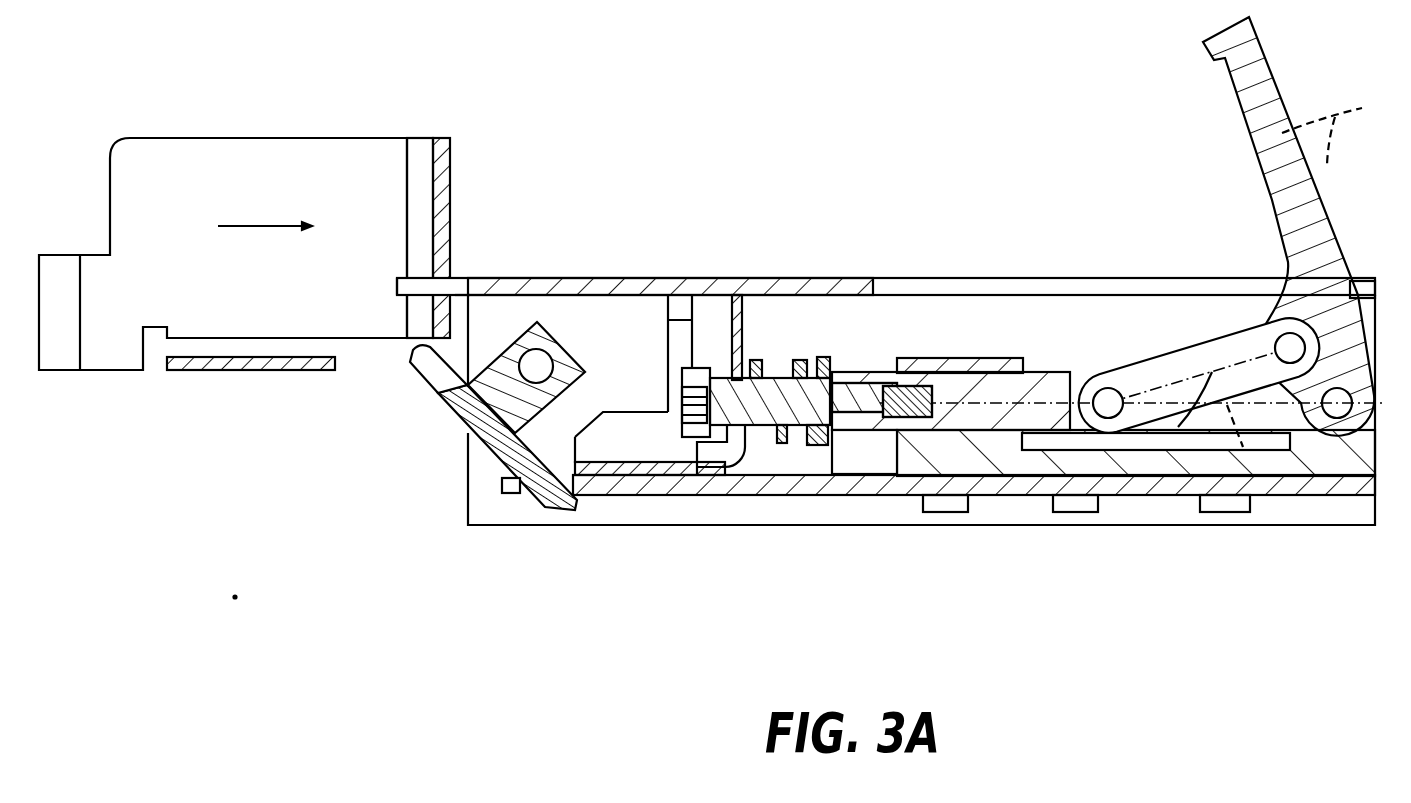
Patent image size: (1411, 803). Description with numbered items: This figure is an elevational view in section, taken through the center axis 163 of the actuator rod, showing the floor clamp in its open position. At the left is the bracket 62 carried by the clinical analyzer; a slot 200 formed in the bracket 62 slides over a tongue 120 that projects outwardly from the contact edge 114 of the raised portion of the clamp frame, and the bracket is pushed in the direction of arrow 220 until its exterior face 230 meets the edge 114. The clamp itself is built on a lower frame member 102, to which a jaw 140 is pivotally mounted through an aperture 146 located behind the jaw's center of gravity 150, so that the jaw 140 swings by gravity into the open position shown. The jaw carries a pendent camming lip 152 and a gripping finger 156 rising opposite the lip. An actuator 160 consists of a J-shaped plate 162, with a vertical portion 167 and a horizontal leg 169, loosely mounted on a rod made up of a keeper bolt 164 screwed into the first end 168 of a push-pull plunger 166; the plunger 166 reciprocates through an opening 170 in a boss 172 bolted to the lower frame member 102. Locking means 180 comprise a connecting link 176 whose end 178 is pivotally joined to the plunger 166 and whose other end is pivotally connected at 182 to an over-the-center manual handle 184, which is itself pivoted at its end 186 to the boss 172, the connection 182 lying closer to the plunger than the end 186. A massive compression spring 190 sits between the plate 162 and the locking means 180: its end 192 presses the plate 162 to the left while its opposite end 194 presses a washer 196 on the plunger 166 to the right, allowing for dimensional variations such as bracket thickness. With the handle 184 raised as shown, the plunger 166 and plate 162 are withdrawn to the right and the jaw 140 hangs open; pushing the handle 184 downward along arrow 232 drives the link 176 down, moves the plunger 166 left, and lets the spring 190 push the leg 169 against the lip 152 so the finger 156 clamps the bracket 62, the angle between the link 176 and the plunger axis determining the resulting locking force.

The bracket 62 is at (283, 203).
The lower frame member 102 is at (921, 443).
The contact edge 114 is at (457, 297).
The tongue 120 is at (410, 297).
The jaw 140 is at (477, 455).
The aperture 146 is at (556, 360).
The center of gravity 150 is at (521, 387).
The camming lip 152 is at (553, 505).
The gripping finger 156 is at (410, 362).
The actuator 160 is at (686, 417).
The plate 162 is at (728, 370).
The center axis 163 is at (978, 478).
The keeper bolt 164 is at (808, 432).
The push-pull plunger 166 is at (1042, 375).
The vertical portion 167 is at (742, 298).
The first end 168 is at (866, 372).
The horizontal leg 169 is at (618, 480).
The opening 170 is at (978, 364).
The boss 172 is at (898, 433).
The connecting link 176 is at (1132, 385).
The end of connecting link 178 is at (1112, 418).
The locking means 180 is at (1108, 267).
The pivotal connection 182 is at (1268, 296).
The over-the-center manual handle 184 is at (1288, 271).
The handle end 186 is at (1327, 418).
The compression spring 190 is at (841, 354).
The spring end 192 is at (760, 478).
The opposite spring end 194 is at (784, 445).
The washer 196 is at (820, 447).
The slot 200 is at (863, 261).
The arrow 220 is at (265, 228).
The exterior face 230 is at (452, 170).
The arrow 232 is at (1308, 88).